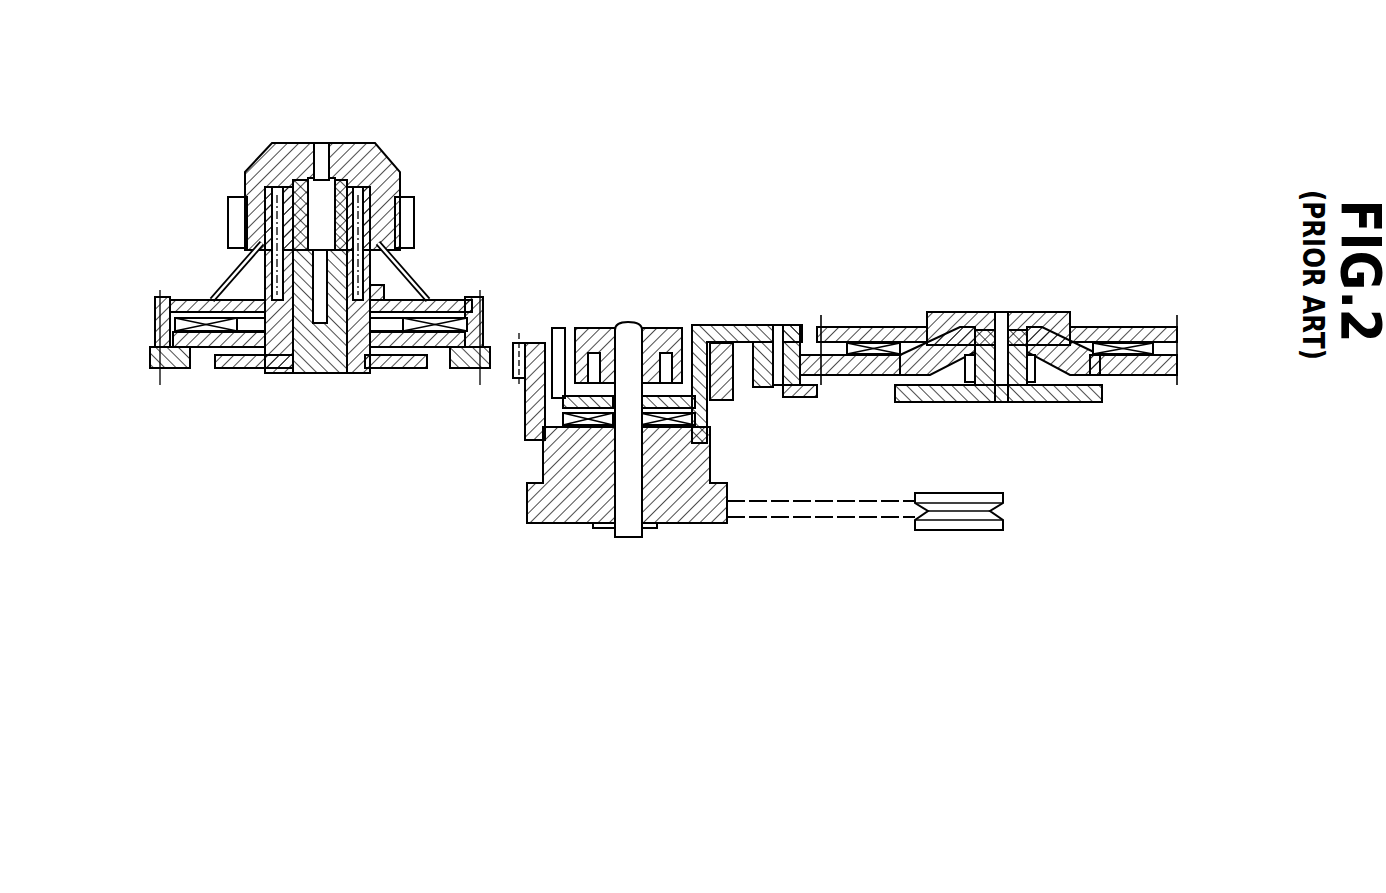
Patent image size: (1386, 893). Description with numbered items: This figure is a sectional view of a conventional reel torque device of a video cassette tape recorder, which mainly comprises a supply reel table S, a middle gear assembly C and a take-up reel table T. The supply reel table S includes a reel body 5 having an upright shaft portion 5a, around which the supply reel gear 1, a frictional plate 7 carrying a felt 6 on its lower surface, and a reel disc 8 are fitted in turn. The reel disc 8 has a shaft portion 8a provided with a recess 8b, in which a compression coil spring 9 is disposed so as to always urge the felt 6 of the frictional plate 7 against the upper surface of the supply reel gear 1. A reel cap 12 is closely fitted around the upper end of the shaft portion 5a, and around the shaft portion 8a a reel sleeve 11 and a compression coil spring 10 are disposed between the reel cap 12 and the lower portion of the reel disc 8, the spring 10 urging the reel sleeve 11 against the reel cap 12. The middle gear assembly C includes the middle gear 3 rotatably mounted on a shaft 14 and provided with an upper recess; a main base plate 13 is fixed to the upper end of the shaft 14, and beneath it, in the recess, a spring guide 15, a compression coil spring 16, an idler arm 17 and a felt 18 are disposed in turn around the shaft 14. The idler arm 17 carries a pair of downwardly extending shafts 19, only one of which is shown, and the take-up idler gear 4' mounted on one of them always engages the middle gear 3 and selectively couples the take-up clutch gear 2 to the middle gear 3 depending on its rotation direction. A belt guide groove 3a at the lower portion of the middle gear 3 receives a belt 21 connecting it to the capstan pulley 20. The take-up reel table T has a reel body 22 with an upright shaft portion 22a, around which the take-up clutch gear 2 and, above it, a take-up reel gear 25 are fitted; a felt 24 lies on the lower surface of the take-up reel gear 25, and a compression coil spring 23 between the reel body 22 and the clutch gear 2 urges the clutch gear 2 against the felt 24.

The supply reel table S is at (157, 283).
The supply reel gear 1 is at (455, 365).
The reel body 5 is at (297, 373).
The upright shaft portion 5a is at (307, 147).
The felt 6 is at (210, 345).
The frictional plate 7 is at (158, 327).
The reel disc 8 is at (158, 308).
The shaft portion 8a is at (230, 203).
The recess 8b is at (383, 283).
The compression coil spring 9 is at (428, 255).
The compression coil spring 10 is at (210, 262).
The reel sleeve 11 is at (388, 167).
The reel cap 12 is at (347, 142).
The middle gear assembly C is at (806, 316).
The middle gear 3 is at (533, 342).
The belt guide groove 3a is at (700, 527).
The main base plate 13 is at (600, 330).
The shaft 14 is at (625, 333).
The spring guide 15 is at (685, 330).
The compression coil spring 16 is at (525, 397).
The idler arm 17 is at (748, 330).
The felt 18 is at (543, 463).
The downwardly extending shaft 19 is at (777, 330).
The take-up idler gear 4' is at (808, 426).
The capstan pulley 20 is at (950, 517).
The belt 21 is at (820, 517).
The take-up reel table T is at (1099, 330).
The take-up clutch gear 2 is at (1183, 373).
The reel body 22 is at (957, 402).
The upright shaft portion 22a is at (998, 333).
The compression coil spring 23 is at (1040, 402).
The felt 24 is at (1127, 375).
The take-up reel gear 25 is at (1182, 333).